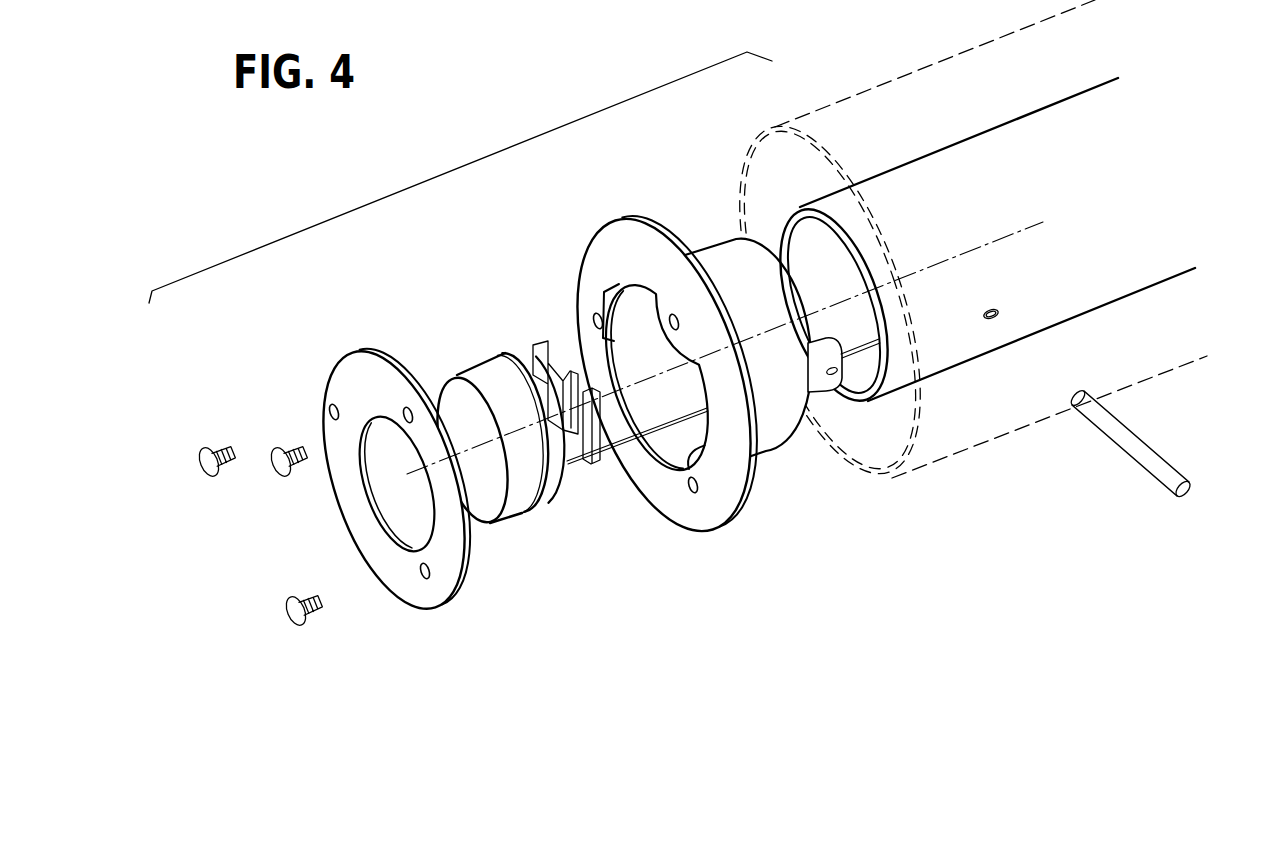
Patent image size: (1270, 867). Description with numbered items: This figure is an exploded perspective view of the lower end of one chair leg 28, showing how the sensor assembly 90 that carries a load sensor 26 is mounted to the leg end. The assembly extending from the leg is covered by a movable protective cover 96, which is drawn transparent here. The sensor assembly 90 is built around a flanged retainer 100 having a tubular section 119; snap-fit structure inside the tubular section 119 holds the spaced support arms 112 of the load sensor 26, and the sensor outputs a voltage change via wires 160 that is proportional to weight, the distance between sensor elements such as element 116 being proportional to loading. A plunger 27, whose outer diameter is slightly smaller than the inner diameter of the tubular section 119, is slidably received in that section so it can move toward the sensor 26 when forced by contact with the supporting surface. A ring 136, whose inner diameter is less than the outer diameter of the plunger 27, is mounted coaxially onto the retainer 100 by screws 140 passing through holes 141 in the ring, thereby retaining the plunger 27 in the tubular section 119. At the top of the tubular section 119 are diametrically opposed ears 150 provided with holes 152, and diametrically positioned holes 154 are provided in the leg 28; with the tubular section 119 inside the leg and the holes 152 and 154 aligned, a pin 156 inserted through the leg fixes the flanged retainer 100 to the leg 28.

The load sensor 26 is at (536, 339).
The plunger 27 is at (441, 371).
The leg 28 is at (989, 191).
The sensor assembly 90 is at (467, 247).
The protective cover 96 is at (905, 70).
The flanged retainer 100 is at (789, 533).
The support arms 112 is at (601, 458).
The sensor element 116 is at (582, 278).
The tubular section 119 is at (716, 255).
The ring 136 is at (346, 372).
The screws 140 is at (220, 447).
The holes 141 is at (329, 411).
The ears 150 is at (842, 358).
The holes 152 is at (830, 377).
The holes 154 is at (998, 309).
The pin 156 is at (1148, 465).
The wires 160 is at (605, 455).